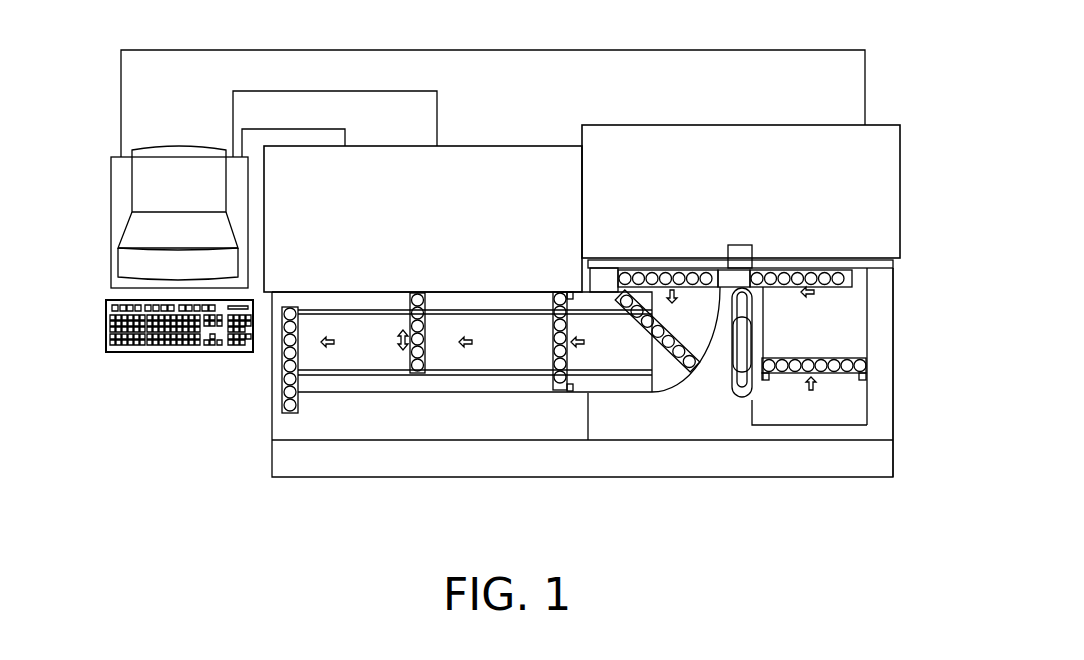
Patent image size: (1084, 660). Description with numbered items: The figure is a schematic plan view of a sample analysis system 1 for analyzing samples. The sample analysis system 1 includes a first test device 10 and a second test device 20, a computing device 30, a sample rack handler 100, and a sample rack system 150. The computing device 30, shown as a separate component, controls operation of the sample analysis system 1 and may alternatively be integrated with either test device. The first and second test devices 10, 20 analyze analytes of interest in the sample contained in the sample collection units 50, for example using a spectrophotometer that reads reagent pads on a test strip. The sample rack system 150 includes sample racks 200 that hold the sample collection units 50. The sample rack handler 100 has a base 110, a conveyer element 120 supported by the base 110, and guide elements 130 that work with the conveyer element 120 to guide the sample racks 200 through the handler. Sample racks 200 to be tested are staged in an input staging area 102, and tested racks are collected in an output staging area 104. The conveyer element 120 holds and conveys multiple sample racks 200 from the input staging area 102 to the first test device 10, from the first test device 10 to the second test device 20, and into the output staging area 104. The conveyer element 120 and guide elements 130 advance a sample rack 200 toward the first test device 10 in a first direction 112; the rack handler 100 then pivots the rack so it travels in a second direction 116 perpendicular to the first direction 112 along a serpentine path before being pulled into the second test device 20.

The sample analysis system 1 is at (102, 68).
The computing device 30 is at (96, 214).
The second test device 20 is at (438, 224).
The first test device 10 is at (753, 195).
The sample rack handler 100 is at (260, 419).
The output staging area 104 is at (377, 367).
The first direction 112 is at (403, 328).
The second direction 116 is at (586, 346).
The guide elements 130 is at (590, 291).
The sample rack system 150 is at (818, 354).
The conveyer element 120 is at (858, 319).
The sample rack 200 is at (867, 362).
The sample collection unit 50 is at (868, 377).
The input staging area 102 is at (832, 419).
The base 110 is at (896, 446).